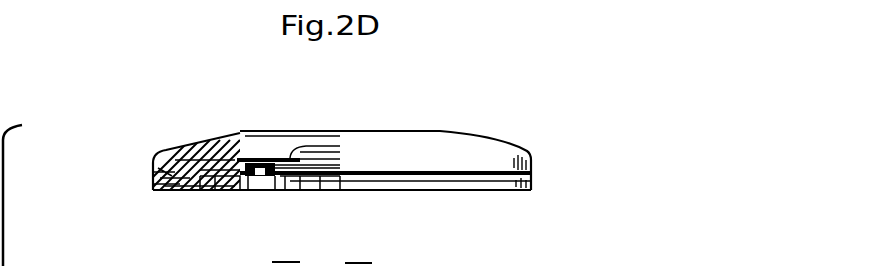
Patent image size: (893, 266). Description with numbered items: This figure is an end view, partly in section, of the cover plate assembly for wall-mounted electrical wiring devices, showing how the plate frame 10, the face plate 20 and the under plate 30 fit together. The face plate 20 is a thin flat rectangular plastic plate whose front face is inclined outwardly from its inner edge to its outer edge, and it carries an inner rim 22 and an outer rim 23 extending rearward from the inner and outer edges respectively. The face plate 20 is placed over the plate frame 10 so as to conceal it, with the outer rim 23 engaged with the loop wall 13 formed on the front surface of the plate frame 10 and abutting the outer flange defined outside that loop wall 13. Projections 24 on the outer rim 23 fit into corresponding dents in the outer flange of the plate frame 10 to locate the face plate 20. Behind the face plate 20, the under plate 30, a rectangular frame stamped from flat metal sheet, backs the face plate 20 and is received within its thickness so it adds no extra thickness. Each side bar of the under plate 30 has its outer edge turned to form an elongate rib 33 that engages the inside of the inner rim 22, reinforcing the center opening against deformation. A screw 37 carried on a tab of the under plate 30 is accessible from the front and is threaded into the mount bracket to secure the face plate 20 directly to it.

The plate frame 10 is at (170, 192).
The loop wall 13 is at (174, 149).
The face plate 20 is at (450, 130).
The inner rim 22 is at (242, 131).
The outer rim 23 is at (155, 171).
The projections 24 is at (155, 184).
The under plate 30 is at (293, 191).
The elongate rib 33 is at (215, 191).
The screw 37 is at (252, 191).